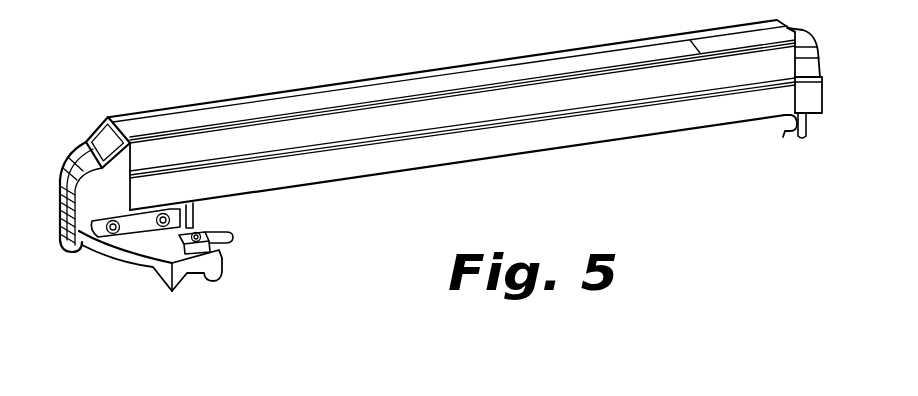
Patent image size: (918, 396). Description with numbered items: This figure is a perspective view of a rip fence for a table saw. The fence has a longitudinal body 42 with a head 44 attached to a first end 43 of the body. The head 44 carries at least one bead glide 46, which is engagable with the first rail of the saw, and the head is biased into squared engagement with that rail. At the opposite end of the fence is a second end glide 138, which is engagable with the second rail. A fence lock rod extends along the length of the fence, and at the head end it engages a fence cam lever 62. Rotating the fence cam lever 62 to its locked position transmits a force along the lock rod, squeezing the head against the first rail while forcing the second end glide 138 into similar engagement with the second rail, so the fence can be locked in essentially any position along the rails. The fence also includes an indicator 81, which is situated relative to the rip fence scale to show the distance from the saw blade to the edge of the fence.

The longitudinal body 42 is at (394, 90).
The first end 43 is at (135, 116).
The head 44 is at (153, 250).
The bead glide 46 is at (186, 279).
The fence cam lever 62 is at (55, 220).
The indicator 81 is at (233, 236).
The second end glide 138 is at (784, 134).